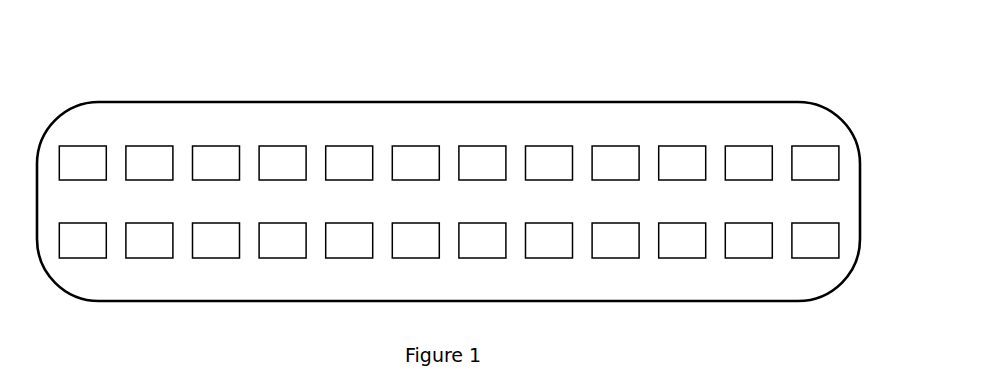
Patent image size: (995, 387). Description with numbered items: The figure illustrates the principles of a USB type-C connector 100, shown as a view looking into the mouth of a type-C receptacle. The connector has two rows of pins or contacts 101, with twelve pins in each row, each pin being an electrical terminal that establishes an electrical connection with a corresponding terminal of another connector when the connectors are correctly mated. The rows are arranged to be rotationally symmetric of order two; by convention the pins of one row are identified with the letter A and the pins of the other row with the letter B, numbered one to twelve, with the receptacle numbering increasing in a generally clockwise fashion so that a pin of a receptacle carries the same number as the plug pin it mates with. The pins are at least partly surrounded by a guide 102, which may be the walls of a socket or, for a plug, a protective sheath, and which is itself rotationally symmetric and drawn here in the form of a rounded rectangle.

The USB type-C connector 100 is at (658, 61).
The pins or contacts 101 is at (350, 146).
The guide 102 is at (220, 100).